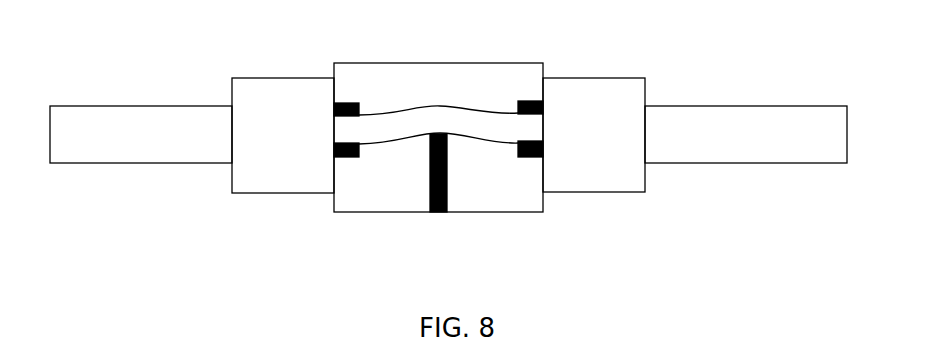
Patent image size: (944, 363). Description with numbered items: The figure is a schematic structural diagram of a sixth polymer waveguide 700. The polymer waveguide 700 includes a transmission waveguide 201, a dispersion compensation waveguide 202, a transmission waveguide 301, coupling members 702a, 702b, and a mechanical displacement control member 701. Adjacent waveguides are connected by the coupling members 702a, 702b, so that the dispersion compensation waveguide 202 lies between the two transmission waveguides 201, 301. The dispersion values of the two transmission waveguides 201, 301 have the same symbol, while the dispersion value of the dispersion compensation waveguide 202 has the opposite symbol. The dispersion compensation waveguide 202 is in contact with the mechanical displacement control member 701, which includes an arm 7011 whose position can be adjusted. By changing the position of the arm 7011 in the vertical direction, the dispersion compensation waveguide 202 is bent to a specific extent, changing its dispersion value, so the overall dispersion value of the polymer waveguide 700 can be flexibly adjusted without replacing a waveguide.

The polymer waveguide 700 is at (835, 72).
The transmission waveguide 201 is at (115, 105).
The transmission waveguide 301 is at (747, 163).
The coupling member 702a is at (264, 193).
The coupling member 702b is at (559, 192).
The mechanical displacement control member 701 is at (397, 212).
The arm 7011 is at (447, 155).
The dispersion compensation waveguide 202 is at (480, 125).